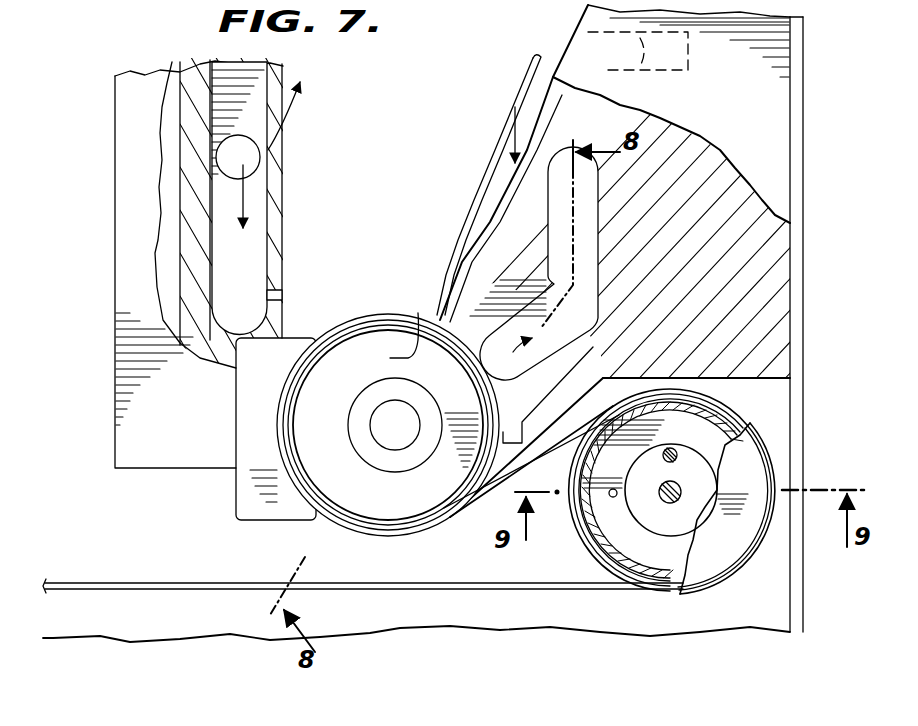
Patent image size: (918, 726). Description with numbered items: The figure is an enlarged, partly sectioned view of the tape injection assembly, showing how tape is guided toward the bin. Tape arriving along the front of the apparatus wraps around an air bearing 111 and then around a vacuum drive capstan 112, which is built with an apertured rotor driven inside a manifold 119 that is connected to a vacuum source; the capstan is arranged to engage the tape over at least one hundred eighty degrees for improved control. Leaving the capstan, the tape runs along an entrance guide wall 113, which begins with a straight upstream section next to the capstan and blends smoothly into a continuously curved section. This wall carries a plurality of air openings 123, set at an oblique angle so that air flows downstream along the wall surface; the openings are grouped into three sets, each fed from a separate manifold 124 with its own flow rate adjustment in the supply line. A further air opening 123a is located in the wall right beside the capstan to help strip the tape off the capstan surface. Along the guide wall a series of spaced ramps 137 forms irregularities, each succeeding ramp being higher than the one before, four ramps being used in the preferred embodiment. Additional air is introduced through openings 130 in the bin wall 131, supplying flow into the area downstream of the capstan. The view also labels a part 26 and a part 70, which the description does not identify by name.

The bin wall 131 is at (190, 192).
The openings 130 is at (262, 143).
The ramps 137 is at (510, 143).
The entrance guide wall 113 is at (484, 208).
The air openings 123 is at (447, 255).
The air opening 123a is at (376, 346).
The manifold 124 is at (560, 99).
The manifold 119 is at (775, 308).
The air bearing 111 is at (777, 455).
The vacuum drive capstan 112 is at (300, 494).
The support plate 26 is at (455, 590).
The base 70 is at (548, 626).